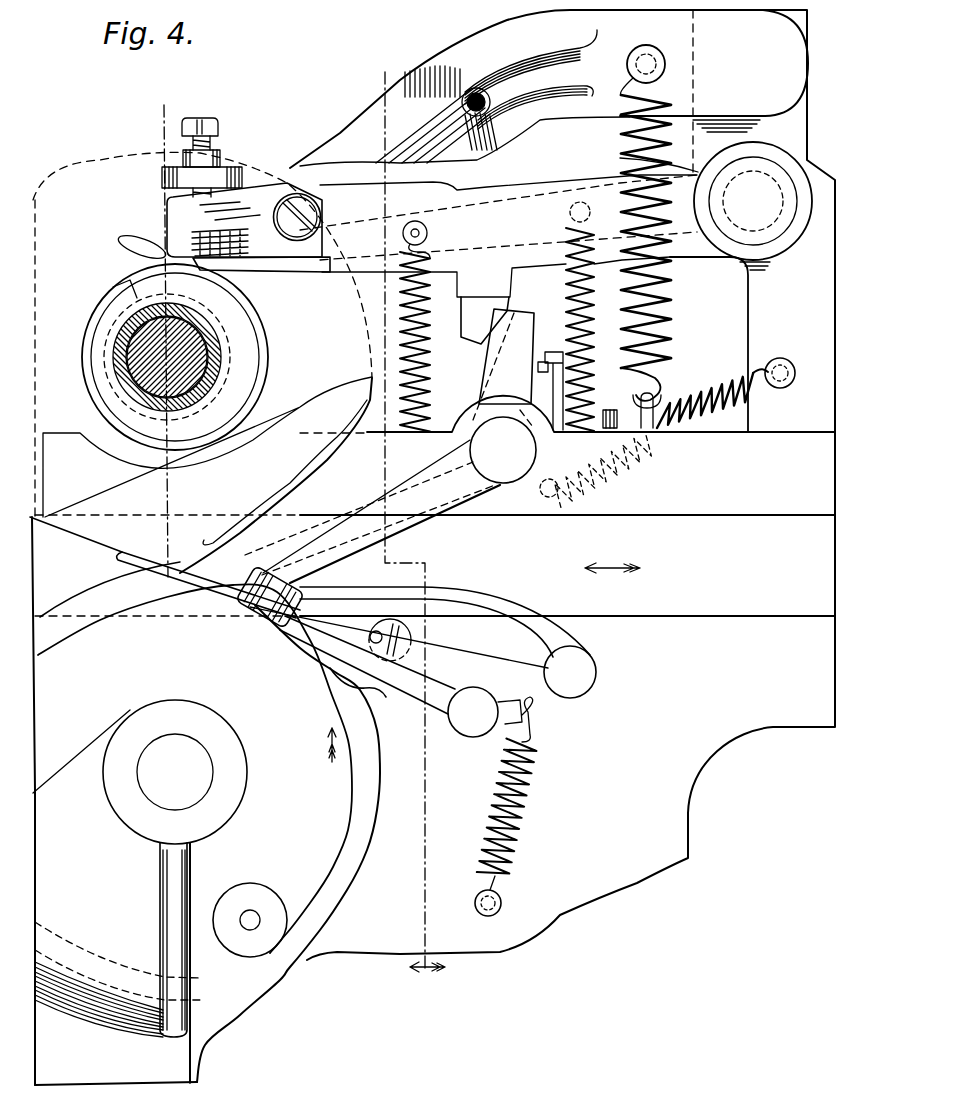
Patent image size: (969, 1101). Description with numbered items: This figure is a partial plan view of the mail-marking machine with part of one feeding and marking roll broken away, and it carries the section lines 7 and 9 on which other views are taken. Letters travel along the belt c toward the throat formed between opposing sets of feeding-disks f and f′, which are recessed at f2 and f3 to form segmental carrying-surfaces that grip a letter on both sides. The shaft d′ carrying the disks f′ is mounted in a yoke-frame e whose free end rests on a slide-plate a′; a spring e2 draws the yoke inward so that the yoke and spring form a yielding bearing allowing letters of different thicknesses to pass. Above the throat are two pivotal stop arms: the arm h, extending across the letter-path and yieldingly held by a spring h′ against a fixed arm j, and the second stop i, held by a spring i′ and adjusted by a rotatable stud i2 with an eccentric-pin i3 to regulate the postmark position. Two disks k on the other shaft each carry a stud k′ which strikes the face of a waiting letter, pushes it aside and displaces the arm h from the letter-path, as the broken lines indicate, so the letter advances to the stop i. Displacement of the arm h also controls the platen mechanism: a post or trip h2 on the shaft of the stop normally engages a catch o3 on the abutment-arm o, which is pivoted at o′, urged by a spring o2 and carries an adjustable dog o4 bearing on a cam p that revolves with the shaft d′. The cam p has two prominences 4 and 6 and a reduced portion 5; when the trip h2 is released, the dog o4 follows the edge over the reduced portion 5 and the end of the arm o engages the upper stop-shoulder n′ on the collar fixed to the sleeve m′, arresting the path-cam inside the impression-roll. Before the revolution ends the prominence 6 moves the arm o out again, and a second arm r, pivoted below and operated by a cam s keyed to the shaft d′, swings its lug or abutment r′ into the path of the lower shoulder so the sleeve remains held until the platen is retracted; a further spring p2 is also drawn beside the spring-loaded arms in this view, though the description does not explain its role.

The yoke-frame e is at (482, 43).
The spring e2 is at (613, 147).
The slide-plate a′ is at (753, 188).
The pivot of arm o o′ is at (760, 232).
The abutment-arm o is at (486, 236).
The spring o2 is at (400, 320).
The catch o3 is at (481, 313).
The adjustable dog o4 is at (167, 206).
The arm r is at (160, 250).
The lug or abutment r′ is at (232, 264).
The stop-shoulder n′ is at (113, 290).
The cam p is at (100, 318).
The spring p2 is at (567, 294).
The cam s is at (82, 352).
The shaft d′ is at (143, 365).
The sleeve m′ is at (217, 355).
The pivotal arm or letter-stop h is at (413, 517).
The spring h′ is at (690, 400).
The post or trip h2 is at (495, 372).
The feeding-disk f is at (353, 843).
The feeding-disk f′ is at (96, 534).
The recess f2 is at (369, 692).
The recess f3 is at (338, 442).
The disk k is at (290, 880).
The stud or abutment k′ is at (298, 582).
The fixed arm j is at (481, 597).
The pivotal arm or stop i is at (438, 677).
The spring i′ is at (514, 837).
The rotatable stud i2 is at (410, 643).
The eccentric-pin i3 is at (370, 633).
The belt c is at (668, 570).
The prominence of cam p 4 is at (187, 279).
The reduced portion of cam p 5 is at (124, 309).
The prominence of cam p 6 is at (229, 431).
The section line 7 7 is at (162, 345).
The section line 9 9 is at (411, 525).